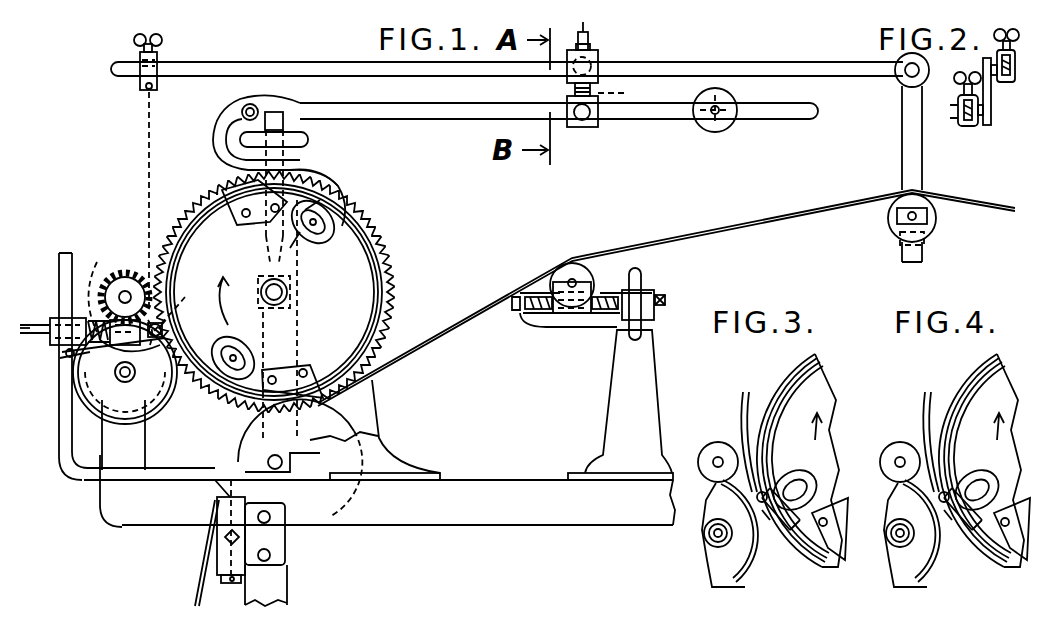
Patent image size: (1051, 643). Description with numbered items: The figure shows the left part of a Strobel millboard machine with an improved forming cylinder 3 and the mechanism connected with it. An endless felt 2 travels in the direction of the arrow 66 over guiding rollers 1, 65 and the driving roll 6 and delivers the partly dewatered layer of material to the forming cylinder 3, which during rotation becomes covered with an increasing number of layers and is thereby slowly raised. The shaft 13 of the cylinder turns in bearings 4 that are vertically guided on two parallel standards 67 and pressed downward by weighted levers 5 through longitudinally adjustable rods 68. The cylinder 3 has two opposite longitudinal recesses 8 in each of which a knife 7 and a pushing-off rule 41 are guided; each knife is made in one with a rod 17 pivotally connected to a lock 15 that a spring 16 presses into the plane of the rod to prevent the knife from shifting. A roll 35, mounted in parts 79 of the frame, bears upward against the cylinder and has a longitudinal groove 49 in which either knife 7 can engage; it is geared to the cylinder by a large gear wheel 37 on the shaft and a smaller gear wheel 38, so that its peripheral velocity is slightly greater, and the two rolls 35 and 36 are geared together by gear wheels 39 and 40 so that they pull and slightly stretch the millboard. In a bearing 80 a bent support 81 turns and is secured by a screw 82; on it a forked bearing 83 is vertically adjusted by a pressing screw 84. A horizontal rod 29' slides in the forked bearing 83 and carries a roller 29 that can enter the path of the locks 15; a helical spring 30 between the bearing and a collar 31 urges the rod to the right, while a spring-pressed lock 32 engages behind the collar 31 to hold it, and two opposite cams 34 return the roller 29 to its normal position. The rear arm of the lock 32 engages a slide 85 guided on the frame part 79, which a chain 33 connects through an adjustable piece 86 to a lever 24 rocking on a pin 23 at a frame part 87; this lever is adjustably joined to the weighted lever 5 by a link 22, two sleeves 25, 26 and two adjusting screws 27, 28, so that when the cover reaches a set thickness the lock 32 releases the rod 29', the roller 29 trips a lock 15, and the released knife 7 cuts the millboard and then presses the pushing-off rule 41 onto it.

In FIG. 1, the guiding roller 1 is at (928, 208).
In FIG. 1, the endless felt 2 is at (470, 320).
In FIG. 1, the forming cylinder 3 is at (396, 292).
In FIG. 3, the forming cylinder 3 is at (785, 380).
In FIG. 4, the forming cylinder 3 is at (981, 459).
In FIG. 1, the bearing 4 is at (294, 292).
In FIG. 1, the weighted lever 5 is at (374, 106).
In FIG. 2, the weighted lever 5 is at (958, 118).
In FIG. 1, the driving roll 6 is at (243, 443).
In FIG. 3, the knife 7 is at (750, 410).
In FIG. 4, the knife 7 is at (929, 436).
In FIG. 1, the longitudinal recess 8 is at (335, 198).
In FIG. 1, the shaft 13 is at (268, 285).
In FIG. 1, the lock 15 is at (327, 208).
In FIG. 3, the lock 15 is at (790, 535).
In FIG. 4, the lock 15 is at (976, 547).
In FIG. 1, the spring 16 is at (345, 236).
In FIG. 3, the spring 16 is at (797, 470).
In FIG. 4, the spring 16 is at (977, 467).
In FIG. 1, the rod 17 is at (330, 226).
In FIG. 3, the rod 17 is at (787, 485).
In FIG. 4, the rod 17 is at (963, 486).
In FIG. 1, the link 22 is at (575, 90).
In FIG. 2, the link 22 is at (982, 118).
In FIG. 1, the pin 23 is at (905, 78).
In FIG. 1, the lever 24 is at (345, 62).
In FIG. 2, the lever 24 is at (992, 124).
In FIG. 1, the sleeve 25 is at (598, 55).
In FIG. 2, the sleeve 25 is at (1012, 82).
In FIG. 1, the sleeve 26 is at (594, 118).
In FIG. 2, the sleeve 26 is at (960, 128).
In FIG. 1, the adjusting screw 27 is at (589, 36).
In FIG. 2, the adjusting screw 27 is at (1006, 30).
In FIG. 1, the adjusting screw 28 is at (628, 93).
In FIG. 2, the adjusting screw 28 is at (956, 86).
In FIG. 1, the roller 29 is at (178, 315).
In FIG. 1, the horizontal rod 29' is at (27, 345).
In FIG. 1, the helical spring 30 is at (95, 318).
In FIG. 1, the collar 31 is at (95, 300).
In FIG. 1, the spring-pressed lock 32 is at (100, 355).
In FIG. 1, the chain 33 is at (148, 148).
In FIG. 1, the cam 34 is at (240, 192).
In FIG. 3, the cam 34 is at (834, 562).
In FIG. 4, the cam 34 is at (1015, 549).
In FIG. 1, the roll 35 is at (95, 388).
In FIG. 3, the roll 35 is at (718, 556).
In FIG. 4, the roll 35 is at (890, 535).
In FIG. 1, the roll 36 is at (130, 272).
In FIG. 3, the roll 36 is at (720, 445).
In FIG. 4, the roll 36 is at (900, 440).
In FIG. 1, the large gear wheel 37 is at (243, 418).
In FIG. 1, the gear wheel 38 is at (165, 410).
In FIG. 1, the gear wheel 39 is at (97, 256).
In FIG. 1, the gear wheel 40 is at (122, 275).
In FIG. 3, the pushing-off rule 41 is at (768, 510).
In FIG. 4, the pushing-off rule 41 is at (960, 538).
In FIG. 3, the longitudinal groove 49 is at (743, 572).
In FIG. 4, the longitudinal groove 49 is at (929, 539).
In FIG. 1, the guiding roller 65 is at (573, 270).
In FIG. 1, the arrow 66 is at (738, 214).
In FIG. 1, the standard 67 is at (382, 390).
In FIG. 1, the longitudinally adjustable rod 68 is at (283, 160).
In FIG. 1, the frame part 79 is at (110, 452).
In FIG. 1, the bearing 80 is at (220, 555).
In FIG. 1, the bent support 81 is at (62, 445).
In FIG. 1, the screw 82 is at (226, 537).
In FIG. 1, the forked bearing 83 is at (70, 322).
In FIG. 1, the pressing screw 84 is at (68, 356).
In FIG. 1, the slide 85 is at (100, 405).
In FIG. 1, the adjustable piece 86 is at (142, 82).
In FIG. 1, the frame part 87 is at (902, 153).